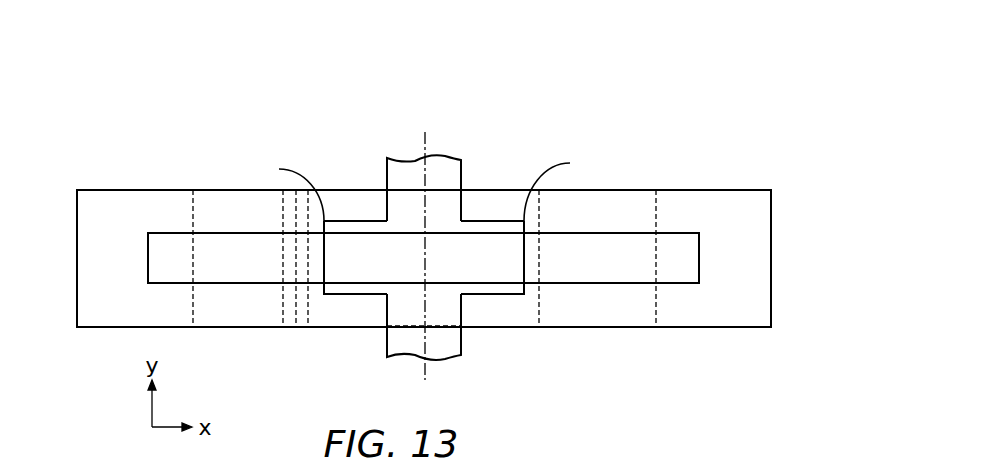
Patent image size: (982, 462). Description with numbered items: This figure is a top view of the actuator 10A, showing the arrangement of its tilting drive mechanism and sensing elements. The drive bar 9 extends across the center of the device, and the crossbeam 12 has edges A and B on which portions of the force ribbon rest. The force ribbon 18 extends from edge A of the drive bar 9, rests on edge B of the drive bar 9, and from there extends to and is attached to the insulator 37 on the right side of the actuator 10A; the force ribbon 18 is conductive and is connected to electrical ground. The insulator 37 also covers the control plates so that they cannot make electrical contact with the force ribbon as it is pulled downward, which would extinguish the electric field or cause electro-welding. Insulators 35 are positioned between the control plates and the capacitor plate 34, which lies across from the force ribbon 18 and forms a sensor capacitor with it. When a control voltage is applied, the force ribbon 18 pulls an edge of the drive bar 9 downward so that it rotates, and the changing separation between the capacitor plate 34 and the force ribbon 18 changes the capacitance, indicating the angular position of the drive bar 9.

The actuator 10A is at (418, 242).
The drive bar 9 is at (443, 169).
The crossbeam 12 is at (485, 287).
The force ribbon 18 is at (238, 271).
The capacitor plate 34 is at (302, 317).
The insulators 35 is at (349, 313).
The insulator 37 is at (720, 195).